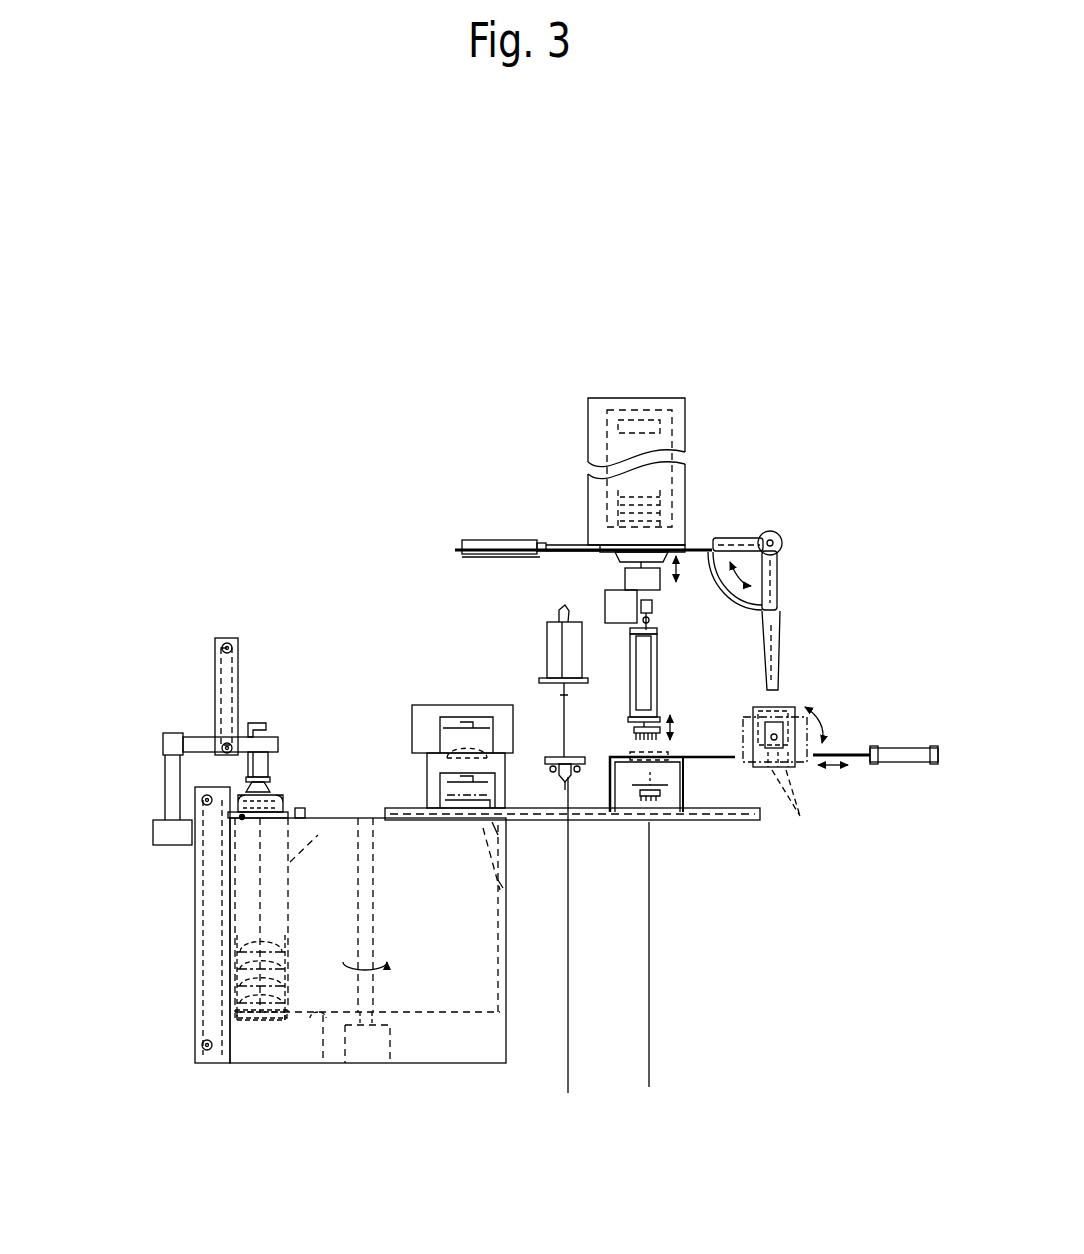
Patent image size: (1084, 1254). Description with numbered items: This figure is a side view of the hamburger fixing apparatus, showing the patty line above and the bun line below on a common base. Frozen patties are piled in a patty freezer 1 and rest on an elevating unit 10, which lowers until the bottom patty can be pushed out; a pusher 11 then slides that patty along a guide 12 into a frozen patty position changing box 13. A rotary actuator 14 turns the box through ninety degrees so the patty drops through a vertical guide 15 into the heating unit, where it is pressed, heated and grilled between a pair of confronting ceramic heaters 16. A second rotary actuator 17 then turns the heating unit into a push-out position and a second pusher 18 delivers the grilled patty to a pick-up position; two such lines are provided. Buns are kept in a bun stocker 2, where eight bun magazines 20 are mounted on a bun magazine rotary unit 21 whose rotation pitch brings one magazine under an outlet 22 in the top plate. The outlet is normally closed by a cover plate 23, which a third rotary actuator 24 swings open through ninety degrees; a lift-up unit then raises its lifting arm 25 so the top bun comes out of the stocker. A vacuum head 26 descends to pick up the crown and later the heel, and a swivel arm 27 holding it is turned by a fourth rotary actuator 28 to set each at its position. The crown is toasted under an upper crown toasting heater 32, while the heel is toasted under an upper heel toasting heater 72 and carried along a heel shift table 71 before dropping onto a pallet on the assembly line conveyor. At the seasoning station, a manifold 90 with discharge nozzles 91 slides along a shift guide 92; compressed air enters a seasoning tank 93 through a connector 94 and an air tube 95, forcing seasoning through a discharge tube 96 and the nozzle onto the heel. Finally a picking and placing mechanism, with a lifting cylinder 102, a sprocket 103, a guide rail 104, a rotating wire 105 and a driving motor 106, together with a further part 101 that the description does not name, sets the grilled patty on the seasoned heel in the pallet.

The patty freezer 1 is at (599, 453).
The elevating unit 10 is at (558, 569).
The pusher 11 is at (531, 505).
The guide 12 is at (764, 538).
The frozen patty position changing box 13 is at (803, 528).
The rotary actuator 14 is at (807, 570).
The vertical guide 15 is at (805, 636).
The ceramic heaters 16 is at (800, 818).
The second rotary actuator 17 is at (827, 724).
The second pusher 18 is at (875, 786).
The bun stocker 2 is at (395, 940).
The bun magazine 20 is at (296, 874).
The bun magazine rotary unit 21 is at (350, 967).
The outlet 22 is at (222, 741).
The cover plate 23 is at (284, 731).
The third rotary actuator 24 is at (322, 755).
The lifting arm 25 is at (261, 1025).
The vacuum head 26 is at (285, 697).
The swivel arm 27 is at (199, 670).
The fourth rotary actuator 28 is at (165, 907).
The upper crown toasting heater 32 is at (449, 722).
The heel shift table 71 is at (524, 889).
The upper heel toasting heater 72 is at (516, 856).
The manifold 90 is at (586, 935).
The discharge nozzle 91 is at (537, 794).
The shift guide 92 is at (580, 782).
The liquid or kneaded seasoning tank 93 is at (519, 645).
The connector 94 is at (530, 599).
The air tube 95 is at (613, 591).
The discharge tube 96 is at (538, 699).
The cleaning frame 101 is at (675, 830).
The lifting cylinder 102 is at (682, 719).
The sprocket 103 is at (676, 644).
The guide rail 104 is at (678, 675).
The rotating wire 105 is at (679, 612).
The driving motor 106 is at (608, 658).